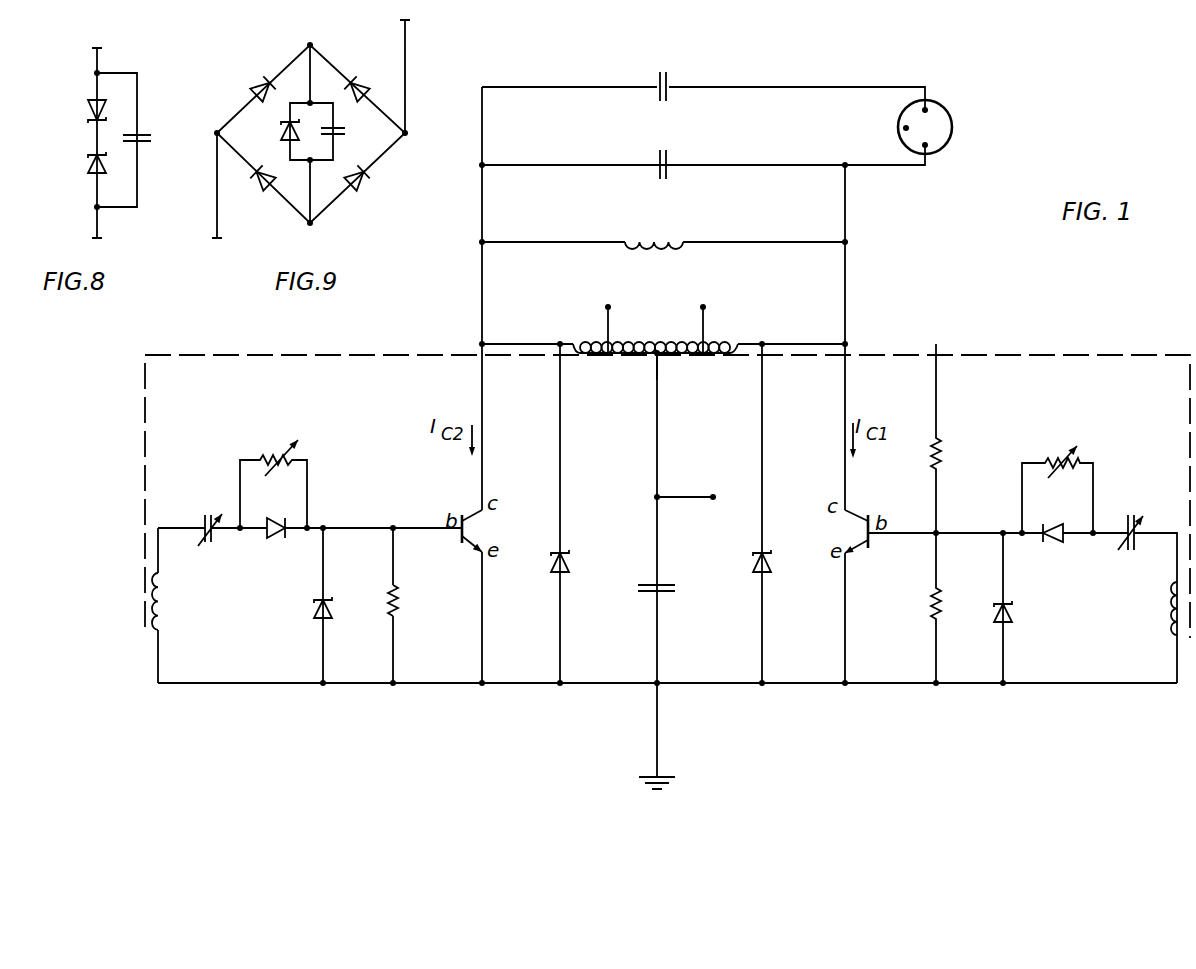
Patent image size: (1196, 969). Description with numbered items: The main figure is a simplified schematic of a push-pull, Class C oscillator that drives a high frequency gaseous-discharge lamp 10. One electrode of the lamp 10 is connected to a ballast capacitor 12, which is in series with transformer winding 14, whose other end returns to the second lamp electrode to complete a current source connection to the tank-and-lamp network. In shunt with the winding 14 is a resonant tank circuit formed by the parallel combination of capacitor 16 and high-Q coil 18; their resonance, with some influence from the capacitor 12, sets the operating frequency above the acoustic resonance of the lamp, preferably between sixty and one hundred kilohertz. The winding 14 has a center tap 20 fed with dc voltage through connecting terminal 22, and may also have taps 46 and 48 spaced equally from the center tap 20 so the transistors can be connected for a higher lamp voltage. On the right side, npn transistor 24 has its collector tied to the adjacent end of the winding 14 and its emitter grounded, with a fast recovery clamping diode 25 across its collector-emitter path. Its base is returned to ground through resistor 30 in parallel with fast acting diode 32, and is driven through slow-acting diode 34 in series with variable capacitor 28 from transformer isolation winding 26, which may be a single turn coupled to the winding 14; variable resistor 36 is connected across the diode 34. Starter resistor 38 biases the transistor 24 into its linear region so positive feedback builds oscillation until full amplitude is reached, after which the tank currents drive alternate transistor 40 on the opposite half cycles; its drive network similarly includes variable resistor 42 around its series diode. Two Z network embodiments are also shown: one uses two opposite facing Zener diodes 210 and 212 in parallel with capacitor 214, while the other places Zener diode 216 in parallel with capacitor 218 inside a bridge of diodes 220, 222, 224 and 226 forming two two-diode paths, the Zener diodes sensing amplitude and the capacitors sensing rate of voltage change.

In FIG. 1, the lamp 10 is at (953, 118).
In FIG. 1, the capacitor 12 is at (667, 77).
In FIG. 1, the transformer winding 14 is at (650, 341).
In FIG. 1, the capacitor 16 is at (668, 159).
In FIG. 1, the high-Q coil 18 is at (661, 240).
In FIG. 1, the center tap 20 is at (658, 355).
In FIG. 1, the connecting terminal 22 is at (713, 500).
In FIG. 1, the npn triode transistor 24 is at (869, 517).
In FIG. 1, the fast recovery clamping diode 25 is at (765, 566).
In FIG. 1, the transformer winding 26 is at (1172, 634).
In FIG. 1, the capacitor 28 is at (1136, 548).
In FIG. 1, the resistor 30 is at (931, 607).
In FIG. 1, the fast acting diode 32 is at (1011, 617).
In FIG. 1, the slow-acting diode 34 is at (1055, 543).
In FIG. 1, the resistor 36 is at (1058, 470).
In FIG. 1, the starter resistor 38 is at (942, 453).
In FIG. 1, the transistor 40 is at (466, 552).
In FIG. 1, the variable resistor 42 is at (284, 466).
In FIG. 1, the tap 46 is at (608, 307).
In FIG. 1, the tap 48 is at (703, 307).
In FIG. 8, the Zener diode 210 is at (90, 103).
In FIG. 8, the Zener diode 212 is at (92, 177).
In FIG. 8, the capacitor 214 is at (149, 132).
In FIG. 9, the Zener diode 216 is at (281, 127).
In FIG. 9, the capacitor 218 is at (341, 128).
In FIG. 9, the diode 220 is at (258, 82).
In FIG. 9, the diode 222 is at (360, 82).
In FIG. 9, the diode 224 is at (364, 188).
In FIG. 9, the diode 226 is at (263, 188).